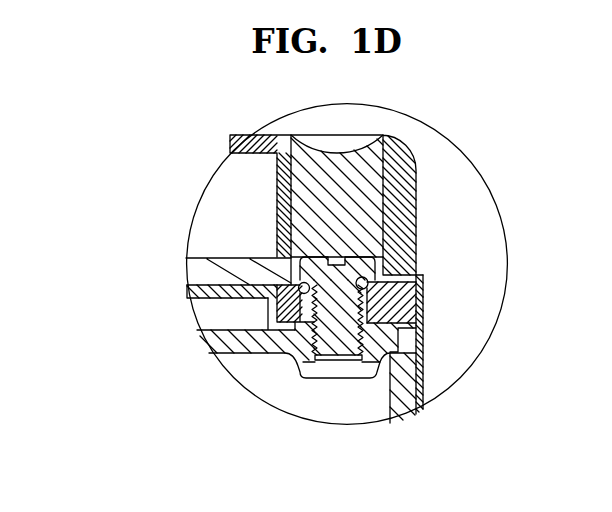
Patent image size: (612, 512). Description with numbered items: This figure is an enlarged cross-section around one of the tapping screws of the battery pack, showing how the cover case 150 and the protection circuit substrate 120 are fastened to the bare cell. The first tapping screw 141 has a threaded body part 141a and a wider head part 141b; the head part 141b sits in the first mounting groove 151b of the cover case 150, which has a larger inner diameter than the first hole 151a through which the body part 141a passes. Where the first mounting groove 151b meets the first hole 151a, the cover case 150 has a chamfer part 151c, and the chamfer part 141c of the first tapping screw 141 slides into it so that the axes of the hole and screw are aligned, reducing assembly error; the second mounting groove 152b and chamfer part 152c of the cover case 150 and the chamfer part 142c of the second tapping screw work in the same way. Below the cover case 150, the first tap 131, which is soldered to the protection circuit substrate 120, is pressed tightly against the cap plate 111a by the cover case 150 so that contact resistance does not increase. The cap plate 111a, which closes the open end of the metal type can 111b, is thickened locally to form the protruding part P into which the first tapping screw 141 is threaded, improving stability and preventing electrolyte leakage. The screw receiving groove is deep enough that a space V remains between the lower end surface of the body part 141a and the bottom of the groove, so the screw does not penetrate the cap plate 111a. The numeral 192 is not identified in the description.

The cover case 150 is at (270, 134).
The recess 192 is at (343, 150).
The first tapping screw 141 is at (384, 247).
The protection circuit substrate 120 is at (204, 253).
The head part 141b is at (424, 276).
The chamfer part 141c is at (368, 281).
The second mounting groove 152b is at (282, 287).
The first mounting groove 151b is at (421, 282).
The chamfer part 151c is at (421, 298).
The first hole 151a is at (421, 317).
The first tap 131 is at (257, 310).
The cap plate 111a is at (212, 341).
The body part 141a is at (418, 352).
The chamfer part 152c is at (285, 318).
The chamfer part 142c is at (313, 350).
The space V is at (332, 361).
The protruding part P is at (357, 392).
The metal type can 111b is at (397, 410).